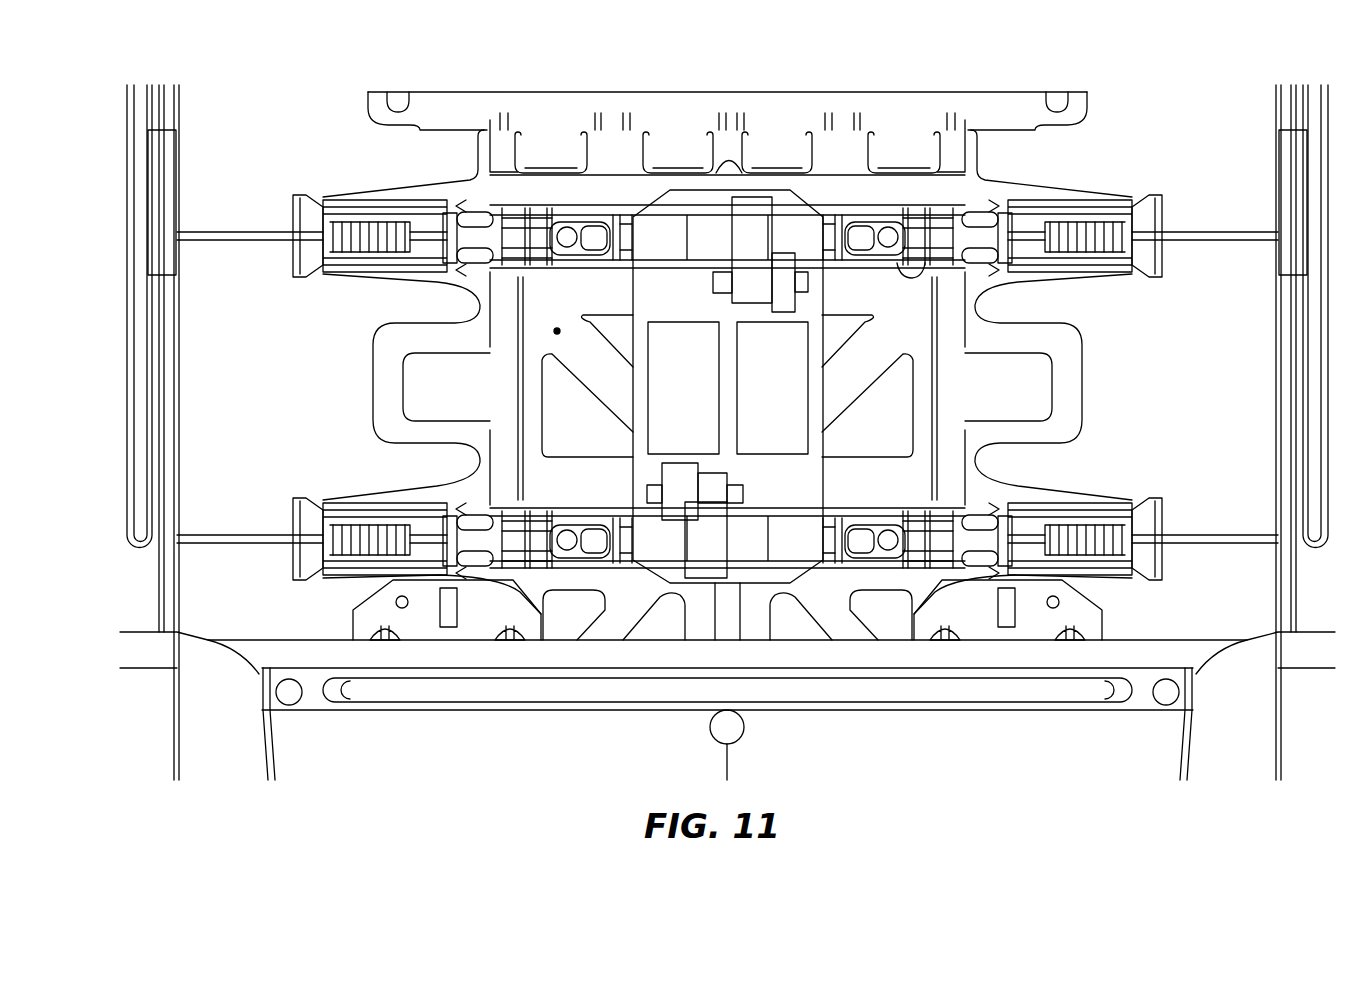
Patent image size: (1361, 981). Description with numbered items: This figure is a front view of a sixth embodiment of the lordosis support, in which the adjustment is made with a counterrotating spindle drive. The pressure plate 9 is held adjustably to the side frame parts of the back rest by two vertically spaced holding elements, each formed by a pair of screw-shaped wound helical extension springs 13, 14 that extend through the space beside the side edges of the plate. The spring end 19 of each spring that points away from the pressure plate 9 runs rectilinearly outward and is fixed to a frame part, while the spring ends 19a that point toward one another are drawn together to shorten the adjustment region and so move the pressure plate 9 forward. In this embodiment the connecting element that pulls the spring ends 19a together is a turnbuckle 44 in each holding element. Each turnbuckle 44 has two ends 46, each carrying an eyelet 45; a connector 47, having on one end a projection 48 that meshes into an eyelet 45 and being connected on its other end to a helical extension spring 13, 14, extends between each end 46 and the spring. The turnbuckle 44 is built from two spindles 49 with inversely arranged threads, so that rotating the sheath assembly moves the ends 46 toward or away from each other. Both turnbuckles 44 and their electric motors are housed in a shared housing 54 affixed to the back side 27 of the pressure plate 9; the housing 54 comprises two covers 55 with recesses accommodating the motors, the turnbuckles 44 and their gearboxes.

The pressure plate 9 is at (897, 323).
The helical extension spring 13 is at (350, 230).
The helical extension spring 14 is at (375, 548).
The spring end 19 is at (1207, 230).
The spring end 19a is at (410, 235).
The back side 27 is at (557, 331).
The turnbuckle 44 is at (848, 227).
The eyelet 45 is at (927, 270).
The end 46 is at (600, 225).
The connector 47 is at (453, 213).
The projection 48 is at (567, 227).
The spindle 49 is at (852, 224).
The housing 54 is at (689, 292).
The cover 55 is at (790, 493).